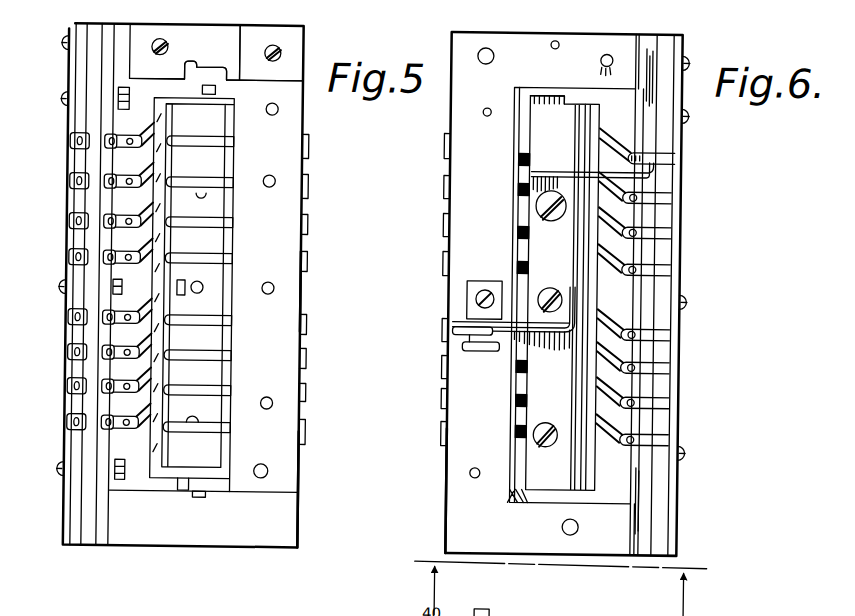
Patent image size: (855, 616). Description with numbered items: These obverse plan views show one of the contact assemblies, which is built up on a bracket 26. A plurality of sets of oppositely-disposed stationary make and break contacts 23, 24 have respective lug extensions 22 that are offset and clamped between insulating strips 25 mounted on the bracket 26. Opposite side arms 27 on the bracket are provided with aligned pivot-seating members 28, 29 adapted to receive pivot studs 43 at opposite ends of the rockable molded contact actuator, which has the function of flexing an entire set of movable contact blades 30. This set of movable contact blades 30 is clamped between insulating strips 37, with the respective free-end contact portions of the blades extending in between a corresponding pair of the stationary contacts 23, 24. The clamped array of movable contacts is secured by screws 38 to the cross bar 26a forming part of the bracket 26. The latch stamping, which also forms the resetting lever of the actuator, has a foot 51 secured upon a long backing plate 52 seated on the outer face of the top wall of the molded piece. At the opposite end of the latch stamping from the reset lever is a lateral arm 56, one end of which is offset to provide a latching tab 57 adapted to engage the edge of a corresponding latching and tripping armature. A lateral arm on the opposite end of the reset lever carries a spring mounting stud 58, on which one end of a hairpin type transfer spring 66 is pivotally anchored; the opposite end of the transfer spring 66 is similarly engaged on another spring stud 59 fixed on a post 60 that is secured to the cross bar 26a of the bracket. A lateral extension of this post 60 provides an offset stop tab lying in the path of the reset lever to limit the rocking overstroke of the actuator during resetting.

In FIG. 5, the lug extensions 22 is at (68, 250).
In FIG. 6, the stationary make and break contacts 23 is at (655, 238).
In FIG. 5, the stationary make and break contacts 24 is at (118, 316).
In FIG. 5, the insulating strips 25 is at (77, 209).
In FIG. 6, the insulating strips 25 is at (662, 142).
In FIG. 5, the bracket 26 is at (419, 297).
In FIG. 6, the cross bar 26a is at (500, 216).
In FIG. 5, the side arms 27 is at (204, 58).
In FIG. 6, the side arms 27 is at (563, 76).
In FIG. 5, the pivot-seating member 28 is at (186, 490).
In FIG. 5, the pivot-seating member 29 is at (213, 77).
In FIG. 6, the pivot-seating member 29 is at (553, 100).
In FIG. 5, the movable contact blades 30 is at (199, 333).
In FIG. 6, the movable contact blades 30 is at (520, 258).
In FIG. 5, the insulating strips 37 is at (297, 477).
In FIG. 6, the insulating strips 37 is at (446, 468).
In FIG. 5, the screws 38 is at (272, 58).
In FIG. 5, the pivot studs 43 is at (213, 90).
In FIG. 6, the foot 51 is at (563, 260).
In FIG. 6, the backing plate 52 is at (563, 388).
In FIG. 6, the lateral arm 56 is at (561, 172).
In FIG. 6, the latching tab 57 is at (629, 152).
In FIG. 6, the spring mounting stud 58 is at (558, 296).
In FIG. 6, the spring stud 59 is at (470, 352).
In FIG. 6, the post 60 is at (497, 352).
In FIG. 6, the transfer spring 66 is at (465, 327).